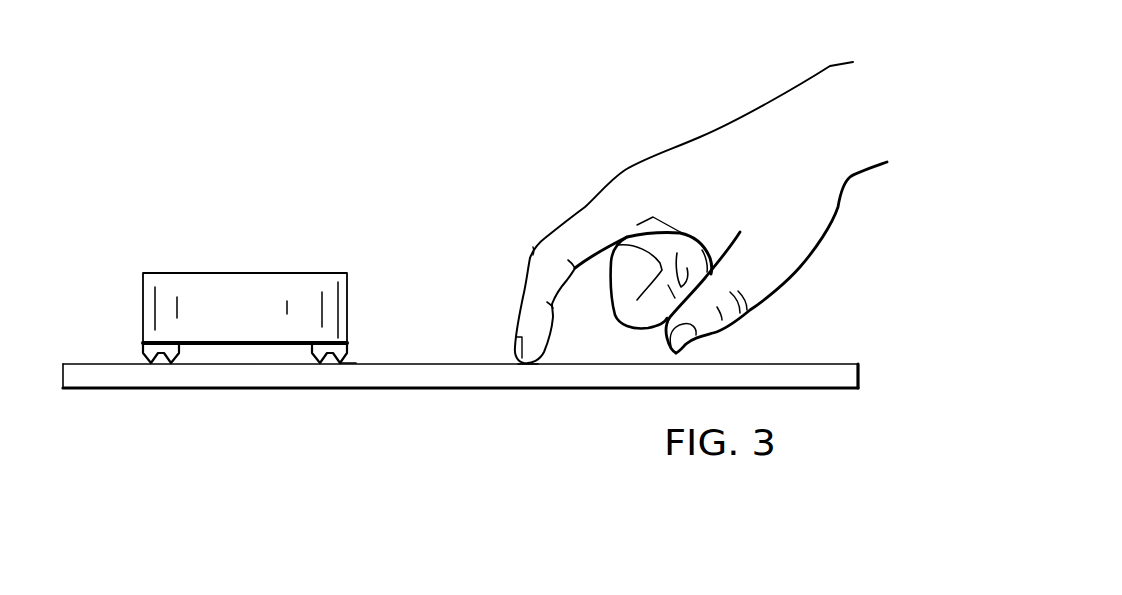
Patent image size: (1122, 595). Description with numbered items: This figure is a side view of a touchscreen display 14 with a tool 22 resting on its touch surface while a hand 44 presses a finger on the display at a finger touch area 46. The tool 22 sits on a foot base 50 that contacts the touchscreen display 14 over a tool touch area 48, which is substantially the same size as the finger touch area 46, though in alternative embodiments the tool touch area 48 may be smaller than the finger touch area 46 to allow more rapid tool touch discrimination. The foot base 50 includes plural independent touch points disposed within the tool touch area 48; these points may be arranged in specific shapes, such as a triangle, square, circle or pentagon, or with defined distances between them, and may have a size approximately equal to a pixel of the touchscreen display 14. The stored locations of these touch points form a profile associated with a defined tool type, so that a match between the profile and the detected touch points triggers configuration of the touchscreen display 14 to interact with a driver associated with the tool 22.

The touchscreen display 14 is at (238, 388).
The tool 22 is at (207, 276).
The hand 44 is at (573, 212).
The finger touch area 46 is at (520, 367).
The tool touch area 48 is at (353, 361).
The foot base 50 is at (245, 273).